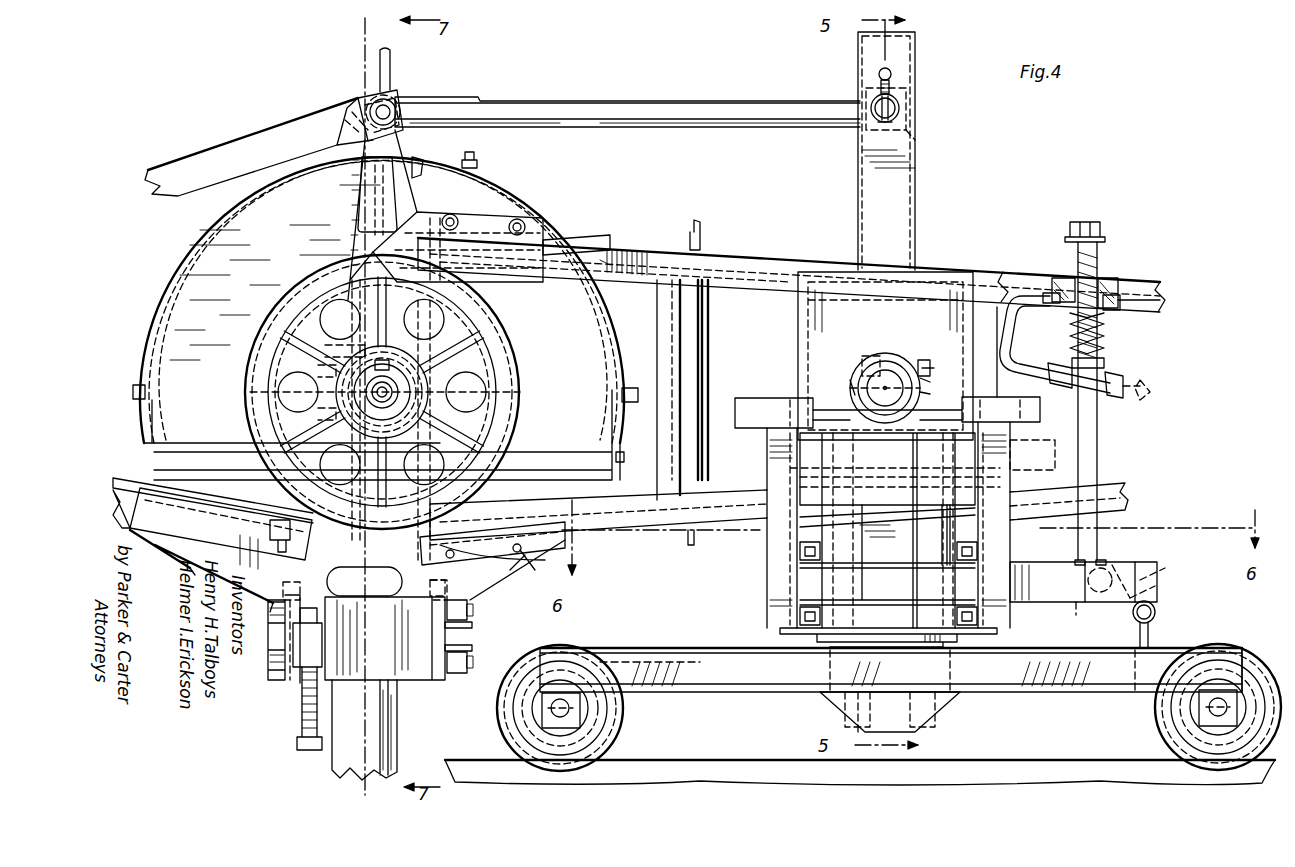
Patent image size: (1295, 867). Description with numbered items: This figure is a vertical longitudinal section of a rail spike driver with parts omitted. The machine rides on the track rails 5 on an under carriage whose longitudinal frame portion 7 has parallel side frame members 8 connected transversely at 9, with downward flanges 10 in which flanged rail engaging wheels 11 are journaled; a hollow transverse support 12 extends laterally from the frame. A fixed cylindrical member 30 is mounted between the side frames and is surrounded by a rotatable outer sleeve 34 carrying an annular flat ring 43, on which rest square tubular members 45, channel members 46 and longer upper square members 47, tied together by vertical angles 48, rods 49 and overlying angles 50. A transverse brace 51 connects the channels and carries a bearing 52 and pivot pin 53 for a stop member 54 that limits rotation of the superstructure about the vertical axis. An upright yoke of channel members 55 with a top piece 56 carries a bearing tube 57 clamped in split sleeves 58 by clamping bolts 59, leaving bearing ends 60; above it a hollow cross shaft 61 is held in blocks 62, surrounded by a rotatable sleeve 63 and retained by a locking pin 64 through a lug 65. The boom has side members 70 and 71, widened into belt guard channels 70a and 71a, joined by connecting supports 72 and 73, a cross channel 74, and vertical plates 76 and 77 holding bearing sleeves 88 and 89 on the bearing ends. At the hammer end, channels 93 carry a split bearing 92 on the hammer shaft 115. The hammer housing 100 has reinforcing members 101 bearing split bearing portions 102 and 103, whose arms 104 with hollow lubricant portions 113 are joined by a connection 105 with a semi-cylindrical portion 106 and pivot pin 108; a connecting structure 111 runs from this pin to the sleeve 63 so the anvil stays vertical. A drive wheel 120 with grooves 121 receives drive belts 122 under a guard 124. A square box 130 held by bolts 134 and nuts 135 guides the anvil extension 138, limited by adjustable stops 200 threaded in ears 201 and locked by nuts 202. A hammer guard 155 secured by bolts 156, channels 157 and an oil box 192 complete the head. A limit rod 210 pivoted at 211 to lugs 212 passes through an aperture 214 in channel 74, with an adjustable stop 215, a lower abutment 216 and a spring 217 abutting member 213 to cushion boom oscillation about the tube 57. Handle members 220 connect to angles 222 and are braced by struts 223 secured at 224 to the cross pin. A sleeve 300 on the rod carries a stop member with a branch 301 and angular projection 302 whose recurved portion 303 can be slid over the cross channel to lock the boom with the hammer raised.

The track rails 5 is at (730, 772).
The longitudinally extending frame portion 7 is at (1062, 692).
The side frame members 8 is at (1024, 692).
The transverse connection 9 is at (658, 658).
The bearings or flanges 10 is at (546, 708).
The rail engaging wheels 11 is at (616, 736).
The transverse support 12 is at (908, 712).
The cylindrical member 30 is at (770, 470).
The outer cylindrical sleeve 34 is at (980, 522).
The annular flat ring 43 is at (780, 633).
The square hollow tubular members 45 is at (800, 611).
The channel members 46 is at (1050, 598).
The transverse square hollow members 47 is at (800, 547).
The vertical elements 48 is at (767, 450).
The longitudinally extending rods or pins 49 is at (828, 410).
The overlying angles 50 is at (760, 398).
The transverse brace 51 is at (1125, 570).
The bearing 52 is at (1157, 612).
The pivot pin 53 is at (1152, 608).
The stop member 54 is at (1160, 572).
The channel members of yoke 55 is at (905, 178).
The top piece 56 is at (905, 32).
The bearing tube 57 is at (886, 378).
The split supporting sleeves 58 is at (918, 358).
The clamping bolts 59 is at (862, 362).
The bearing end 60 is at (852, 383).
The hollow cross shaft 61 is at (899, 108).
The blocks 62 is at (918, 141).
The rotatable sleeve 63 is at (908, 94).
The locking pin 64 is at (892, 72).
The lug 65 is at (892, 86).
The upper boom side frame member 70 is at (1166, 296).
The guard channel 70a is at (746, 262).
The lower boom side frame member 71 is at (1105, 480).
The guard channel 71a is at (632, 532).
The connecting supports 72 is at (656, 311).
The connecting supports 73 is at (690, 228).
The cross channel 74 is at (1122, 300).
The vertical connecting plate 76 is at (720, 300).
The vertical connecting plate 77 is at (810, 280).
The bearing sleeve 88 is at (922, 384).
The integral bearing sleeves 89 is at (922, 392).
The split bearing sleeve 92 is at (346, 348).
The channels 93 is at (435, 318).
The hammer housing lower portion 100 is at (520, 576).
The reinforcing members 101 is at (386, 392).
The lower split bearing portion 102 is at (318, 412).
The upper split bearing portion 103 is at (318, 366).
The side frame portion 104 is at (352, 196).
The transverse connection 105 is at (380, 56).
The semi-cylindrical portion 106 is at (366, 96).
The pivot pin 108 is at (352, 108).
The connecting structure 111 is at (563, 98).
The hollow portion 113 is at (377, 196).
The hammer shaft 115 is at (416, 396).
The drive wheel 120 is at (519, 376).
The belt receiving grooves 121 is at (500, 347).
The drive belts 122 is at (567, 290).
The belt and pulley guard 124 is at (470, 214).
The square box 130 is at (418, 682).
The headed bolts 134 is at (468, 610).
The securing nuts 135 is at (466, 626).
The tubular downward extension 138 is at (398, 745).
The hammer guard 155 is at (420, 165).
The bolts 156 is at (142, 452).
The channels 157 is at (210, 238).
The oil box 192 is at (135, 530).
The adjustable stops 200 is at (300, 696).
The ears 201 is at (294, 645).
The nut 202 is at (320, 624).
The limit rod 210 is at (1098, 438).
The pivot 211 is at (1082, 566).
The lugs 212 is at (1093, 617).
The member at bottom of channel 213 is at (1110, 308).
The aperture 214 is at (1100, 282).
The adjustable stop 215 is at (1090, 222).
The lower abutment 216 is at (1108, 362).
The spring 217 is at (1108, 345).
The handle members 220 is at (208, 500).
The angles 222 is at (136, 478).
The handle supporting struts 223 is at (220, 150).
The securing point 224 is at (393, 106).
The sleeve 300 is at (1066, 390).
The branch 301 is at (1022, 360).
The angular projection 302 is at (1008, 310).
The recurved portion 303 is at (1050, 293).